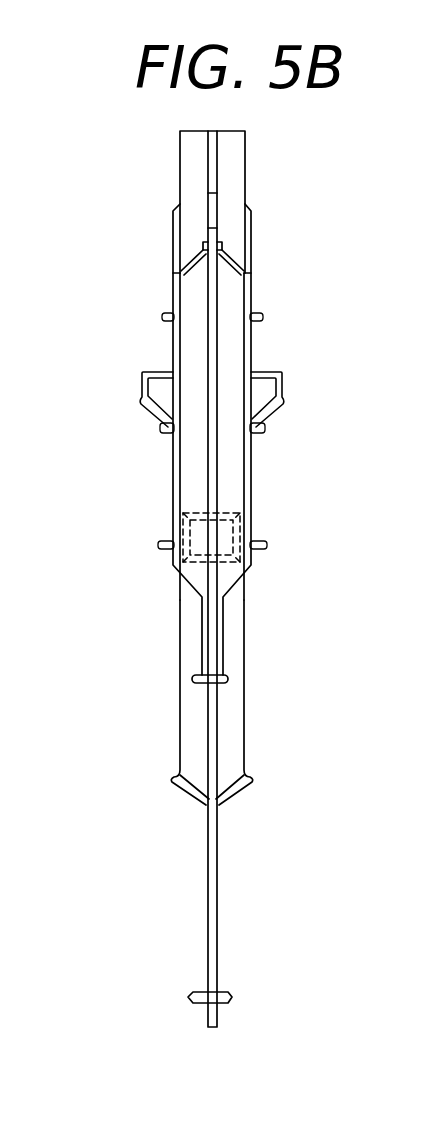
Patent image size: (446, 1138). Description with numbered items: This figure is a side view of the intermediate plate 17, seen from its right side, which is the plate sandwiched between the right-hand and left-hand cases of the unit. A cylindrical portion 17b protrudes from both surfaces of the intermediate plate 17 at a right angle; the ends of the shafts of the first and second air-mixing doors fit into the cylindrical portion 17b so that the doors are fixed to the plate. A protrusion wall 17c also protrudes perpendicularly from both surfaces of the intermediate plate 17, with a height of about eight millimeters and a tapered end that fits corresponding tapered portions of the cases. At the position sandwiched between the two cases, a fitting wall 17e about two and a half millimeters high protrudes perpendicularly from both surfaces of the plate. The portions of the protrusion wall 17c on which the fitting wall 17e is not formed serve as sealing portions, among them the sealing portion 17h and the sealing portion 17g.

The intermediate plate 17 is at (104, 300).
The sealing portion 17h is at (237, 185).
The protrusion wall 17c is at (232, 337).
The fitting wall 17e is at (252, 457).
The cylindrical portion 17b is at (207, 515).
The sealing portion 17g is at (232, 718).